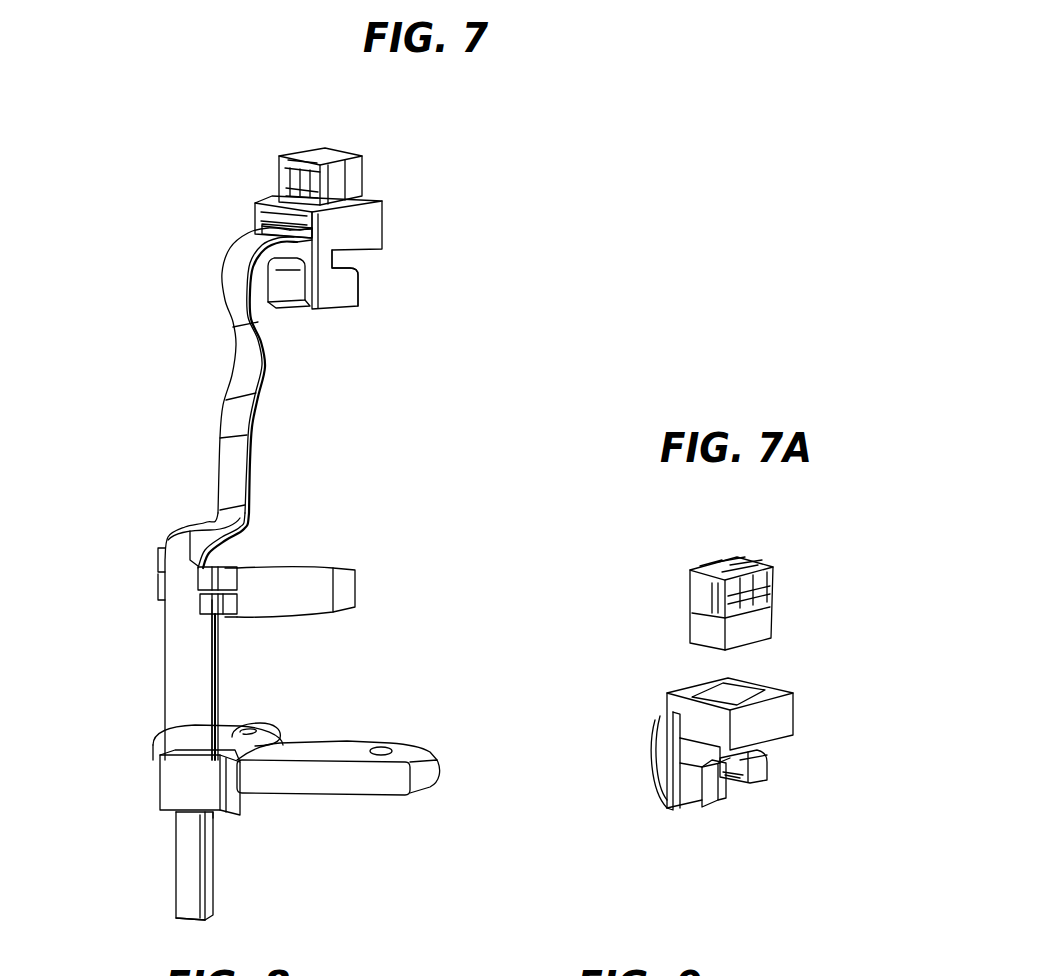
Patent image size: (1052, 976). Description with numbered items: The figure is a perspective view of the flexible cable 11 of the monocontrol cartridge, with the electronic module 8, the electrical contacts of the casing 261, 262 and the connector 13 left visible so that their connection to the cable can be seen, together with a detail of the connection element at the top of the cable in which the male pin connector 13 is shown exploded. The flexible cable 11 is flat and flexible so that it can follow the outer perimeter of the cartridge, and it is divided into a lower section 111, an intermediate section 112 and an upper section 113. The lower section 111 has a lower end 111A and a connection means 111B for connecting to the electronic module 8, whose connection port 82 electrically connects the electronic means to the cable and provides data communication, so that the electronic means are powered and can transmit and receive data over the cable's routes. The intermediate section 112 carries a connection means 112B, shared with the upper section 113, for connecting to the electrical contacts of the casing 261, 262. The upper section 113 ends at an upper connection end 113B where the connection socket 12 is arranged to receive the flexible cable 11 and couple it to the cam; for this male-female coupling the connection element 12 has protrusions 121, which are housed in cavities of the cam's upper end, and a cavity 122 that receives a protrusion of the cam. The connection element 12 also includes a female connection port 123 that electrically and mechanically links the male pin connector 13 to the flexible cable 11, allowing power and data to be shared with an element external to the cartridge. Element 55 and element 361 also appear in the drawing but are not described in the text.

In FIG. 7, the electronic module 8 is at (441, 756).
In FIG. 7, the flexible cable 11 is at (541, 183).
In FIG. 7, the connection socket 12 is at (389, 216).
In FIG. 7A, the connection socket 12 is at (650, 740).
In FIG. 7, the connector 13 is at (289, 147).
In FIG. 7A, the connector 13 is at (688, 573).
In FIG. 7, the clip plate 55 is at (359, 592).
In FIG. 7, the connection port 82 is at (160, 753).
In FIG. 7, the lower section 111 is at (160, 859).
In FIG. 7, the lower end 111A is at (183, 921).
In FIG. 7, the connection means 111B is at (206, 814).
In FIG. 7, the intermediate section 112 is at (160, 673).
In FIG. 7, the connection means 112B is at (205, 566).
In FIG. 7, the upper section 113 is at (221, 406).
In FIG. 7, the upper connection end 113B is at (264, 227).
In FIG. 7, the protrusions 121 is at (356, 293).
In FIG. 7A, the protrusions 121 is at (782, 766).
In FIG. 7, the cavity 122 is at (292, 305).
In FIG. 7A, the cavity 122 is at (757, 784).
In FIG. 7A, the connection port 123 is at (742, 690).
In FIG. 7, the electrical contacts of the casing 261 is at (159, 583).
In FIG. 7, the electrical contacts of the casing 262 is at (159, 554).
In FIG. 7, the thin strip 361 is at (225, 692).